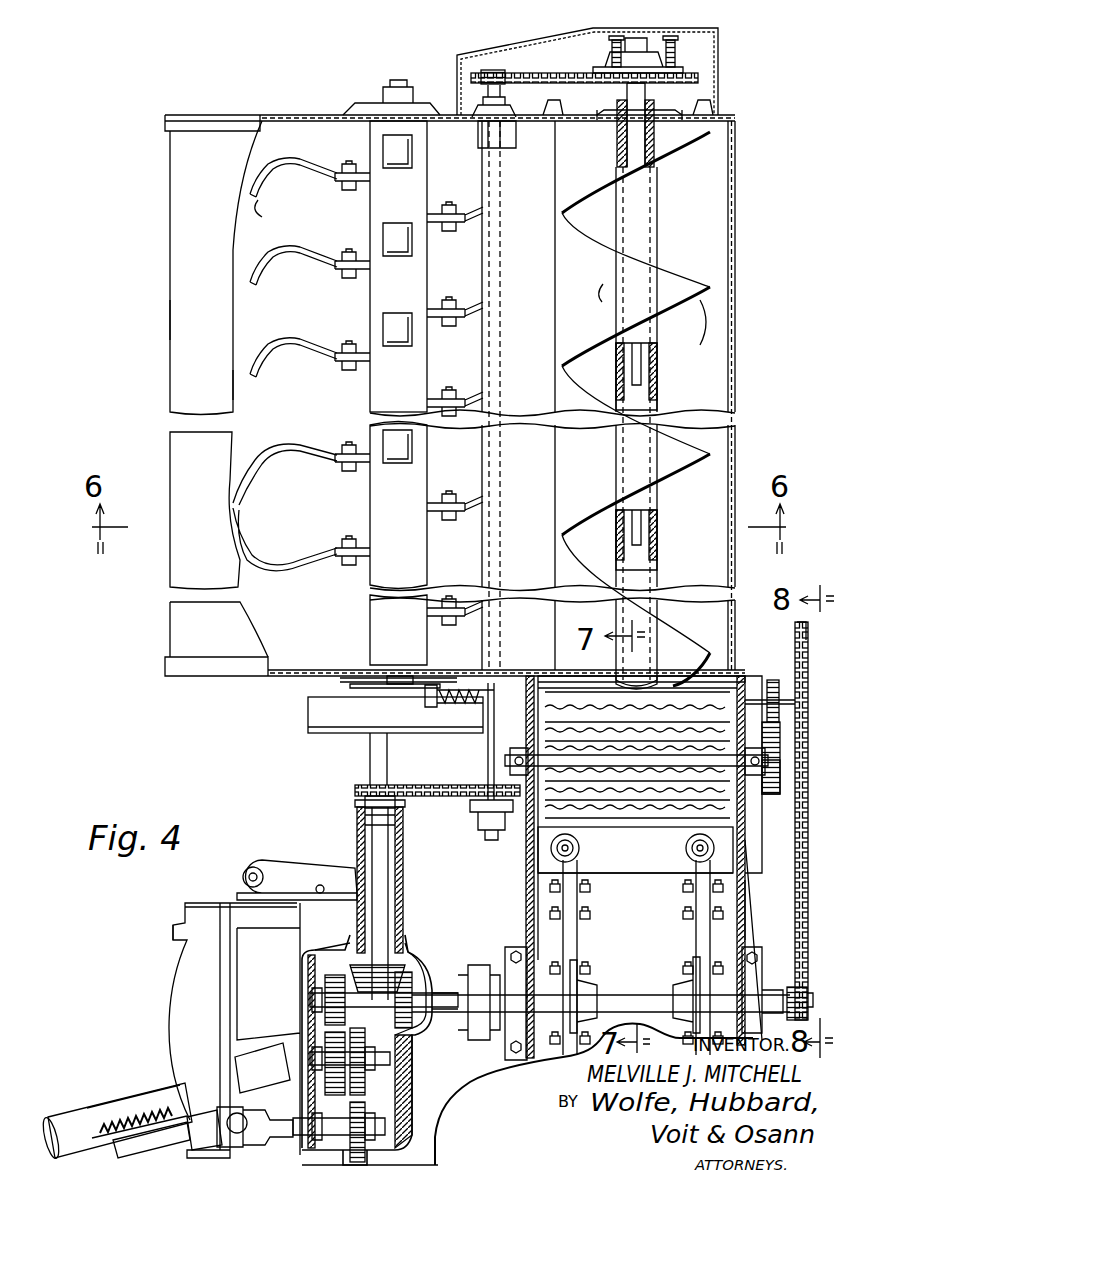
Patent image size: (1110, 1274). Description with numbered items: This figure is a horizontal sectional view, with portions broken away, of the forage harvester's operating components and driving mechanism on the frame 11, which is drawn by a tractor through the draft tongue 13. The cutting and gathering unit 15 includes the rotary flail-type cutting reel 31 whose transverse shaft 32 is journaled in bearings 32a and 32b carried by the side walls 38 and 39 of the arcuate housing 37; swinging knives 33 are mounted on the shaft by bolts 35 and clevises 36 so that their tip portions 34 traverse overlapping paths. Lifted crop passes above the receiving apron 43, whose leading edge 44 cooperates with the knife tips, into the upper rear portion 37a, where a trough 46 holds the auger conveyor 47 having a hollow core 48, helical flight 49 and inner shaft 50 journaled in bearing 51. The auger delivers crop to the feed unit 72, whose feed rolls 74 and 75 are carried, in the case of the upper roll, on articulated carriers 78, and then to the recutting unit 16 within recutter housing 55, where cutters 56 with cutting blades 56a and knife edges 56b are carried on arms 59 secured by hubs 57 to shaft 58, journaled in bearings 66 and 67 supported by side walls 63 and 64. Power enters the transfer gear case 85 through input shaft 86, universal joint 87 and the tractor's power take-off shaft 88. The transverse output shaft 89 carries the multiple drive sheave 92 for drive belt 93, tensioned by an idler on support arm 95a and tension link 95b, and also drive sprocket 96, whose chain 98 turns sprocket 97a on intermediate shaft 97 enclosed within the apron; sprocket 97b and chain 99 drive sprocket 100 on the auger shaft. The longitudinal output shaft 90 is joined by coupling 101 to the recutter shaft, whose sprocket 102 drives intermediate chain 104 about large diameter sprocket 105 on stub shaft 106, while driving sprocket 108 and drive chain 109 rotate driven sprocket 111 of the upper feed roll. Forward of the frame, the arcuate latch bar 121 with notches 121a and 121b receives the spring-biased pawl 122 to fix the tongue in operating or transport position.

The frame 11 is at (458, 1122).
The draft tongue 13 is at (76, 1104).
The cutting and gathering unit 15 is at (160, 324).
The recutting or chopping unit 16 is at (756, 914).
The rotary flail-type cutting reel 31 is at (238, 388).
The shaft 32 is at (385, 428).
The bearing 32a is at (362, 110).
The bearing 32b is at (342, 681).
The swinging knives 33 is at (262, 350).
The tip portions 34 is at (256, 190).
The bolts 35 is at (348, 190).
The clevises 36 is at (445, 392).
The arcuate housing 37 is at (172, 216).
The upper rear portion of housing 37a is at (735, 228).
The side wall 38 is at (304, 115).
The side wall 39 is at (268, 672).
The receiving apron 43 is at (546, 262).
The leading edge 44 is at (483, 186).
The trough 46 is at (708, 322).
The auger conveyor 47 is at (726, 287).
The hollow core 48 is at (656, 197).
The helical auger flight 49 is at (672, 275).
The inner shaft 50 is at (630, 137).
The bearing 51 is at (652, 108).
The recutter housing 55 is at (514, 904).
The cutters 56 is at (556, 946).
The cutting blades 56a is at (540, 877).
The knife edges 56b is at (632, 832).
The hubs 57 is at (657, 985).
The shaft 58 is at (644, 1005).
The radially projecting arms 59 is at (568, 954).
The side wall 63 is at (532, 860).
The side wall 64 is at (746, 864).
The bearing 66 is at (512, 978).
The bearing 67 is at (756, 975).
The feed unit 72 is at (666, 680).
The feed roll 74 is at (575, 702).
The feed roll 75 is at (556, 705).
The articulated carriers 78 is at (509, 762).
The transfer gear case 85 is at (406, 1088).
The input shaft 86 is at (380, 1108).
The universal joint 87 is at (255, 1147).
The power take-off shaft 88 is at (152, 1145).
The transverse output shaft 89 is at (376, 852).
The longitudinal output shaft 90 is at (446, 1008).
The multiple drive sheave 92 is at (313, 735).
The drive belt 93 is at (308, 717).
The support arm 95a is at (420, 690).
The tension link 95b is at (440, 690).
The drive sprocket 96 is at (365, 802).
The intermediate shaft 97 is at (485, 134).
The sprocket 97a is at (486, 814).
The sprocket 97b is at (492, 70).
The drive chain 98 is at (424, 786).
The drive chain 99 is at (538, 73).
The sprocket 100 is at (690, 73).
The coupling 101 is at (471, 1035).
The sprocket 102 is at (805, 992).
The intermediate drive chain 104 is at (803, 845).
The large diameter sprocket 105 is at (795, 640).
The stub shaft 106 is at (782, 700).
The driving sprocket 108 is at (771, 680).
The drive chain 109 is at (782, 746).
The driven sprocket 111 is at (768, 796).
The latch bar 121 is at (168, 988).
The positioning notch 121a is at (190, 1112).
The positioning notch 121b is at (185, 924).
The spring-biased pawl 122 is at (167, 1088).